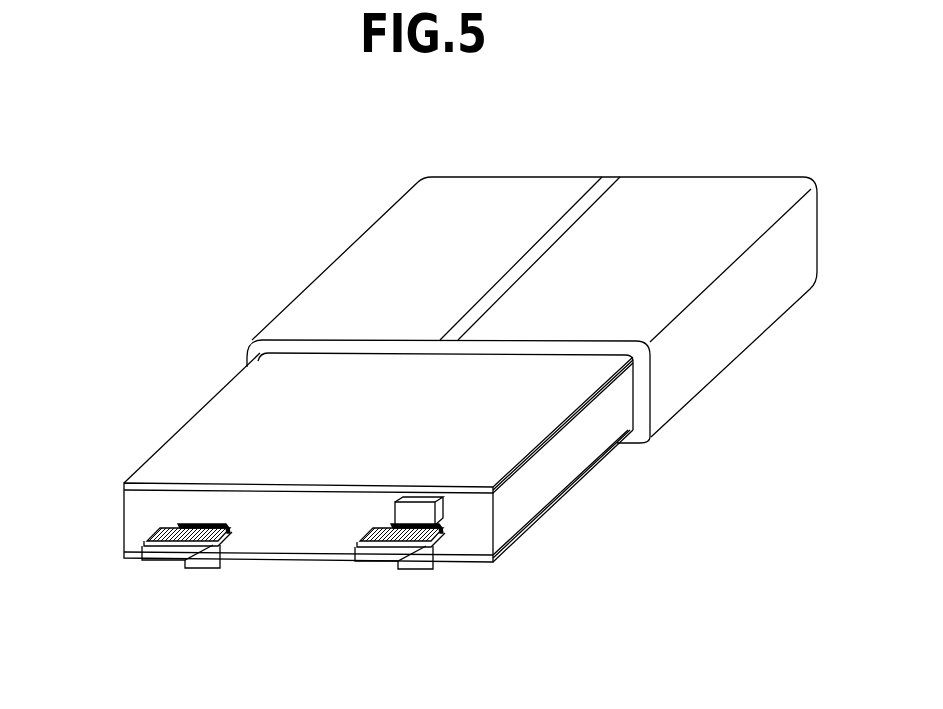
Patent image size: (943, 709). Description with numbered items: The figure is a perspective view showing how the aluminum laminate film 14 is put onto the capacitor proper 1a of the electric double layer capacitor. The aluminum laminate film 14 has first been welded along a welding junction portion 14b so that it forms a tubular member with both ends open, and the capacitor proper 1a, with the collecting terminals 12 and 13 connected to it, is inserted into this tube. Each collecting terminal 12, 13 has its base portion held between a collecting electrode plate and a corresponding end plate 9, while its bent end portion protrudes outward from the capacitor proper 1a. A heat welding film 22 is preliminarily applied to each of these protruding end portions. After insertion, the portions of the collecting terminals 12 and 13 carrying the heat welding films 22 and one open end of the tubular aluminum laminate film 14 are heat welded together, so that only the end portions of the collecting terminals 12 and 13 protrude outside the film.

The aluminum laminate film 14 is at (333, 262).
The welding junction portion 14b is at (613, 177).
The capacitor proper 1a is at (126, 432).
The end plate 9 is at (543, 447).
The heat welding film 22 is at (228, 537).
The collecting terminal 13 is at (148, 578).
The collecting terminal 12 is at (401, 578).